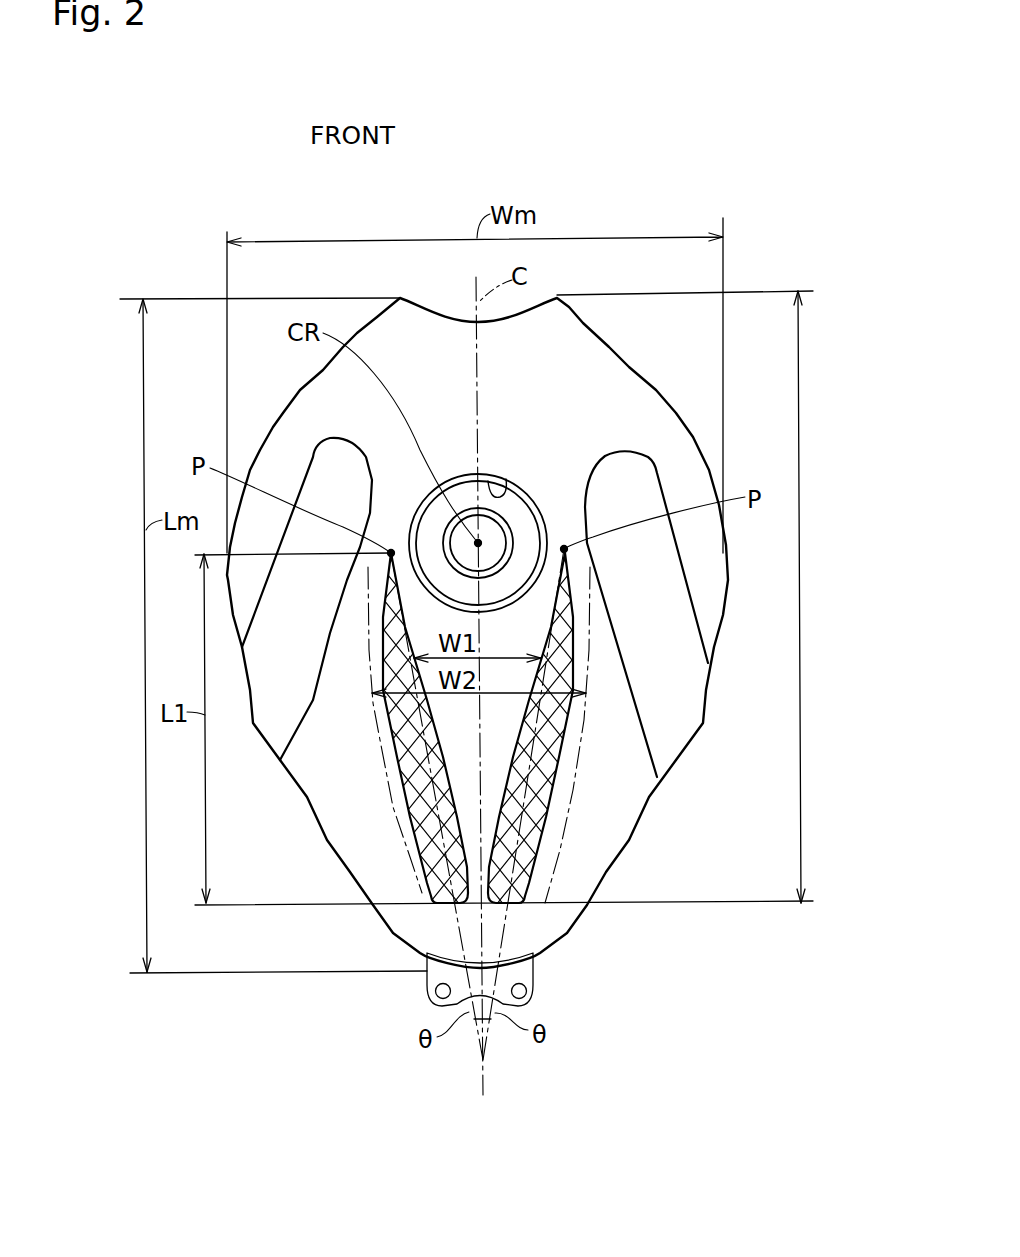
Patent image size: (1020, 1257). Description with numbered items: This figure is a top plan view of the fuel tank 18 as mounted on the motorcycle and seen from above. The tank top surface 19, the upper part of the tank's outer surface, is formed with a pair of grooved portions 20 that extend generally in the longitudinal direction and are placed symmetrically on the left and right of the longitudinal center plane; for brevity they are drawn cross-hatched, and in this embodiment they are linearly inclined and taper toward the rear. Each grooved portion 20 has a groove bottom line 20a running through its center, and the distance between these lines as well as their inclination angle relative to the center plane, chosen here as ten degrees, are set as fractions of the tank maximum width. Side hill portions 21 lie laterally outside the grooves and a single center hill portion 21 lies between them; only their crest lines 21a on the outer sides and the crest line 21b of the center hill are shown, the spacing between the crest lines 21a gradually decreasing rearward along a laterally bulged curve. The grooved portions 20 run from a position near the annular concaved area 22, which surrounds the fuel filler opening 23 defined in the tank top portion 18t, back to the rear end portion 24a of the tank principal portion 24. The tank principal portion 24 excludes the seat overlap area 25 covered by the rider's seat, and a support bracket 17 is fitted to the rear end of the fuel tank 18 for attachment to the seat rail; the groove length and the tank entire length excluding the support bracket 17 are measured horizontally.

The support bracket 17 is at (525, 977).
The fuel tank 18 is at (687, 420).
The tank top portion 18t is at (372, 478).
The tank top surface 19 is at (492, 533).
The grooved portion 20 is at (419, 796).
The groove bottom line 20a is at (372, 738).
The hill portion 21 is at (350, 708).
The crest line 21a is at (367, 677).
The crest line 21b is at (547, 620).
The annular concaved area 22 is at (515, 482).
The fuel filler opening 23 is at (559, 521).
The tank principal portion 24 is at (799, 548).
The rear end portion 24a is at (560, 903).
The seat overlap area 25 is at (427, 940).